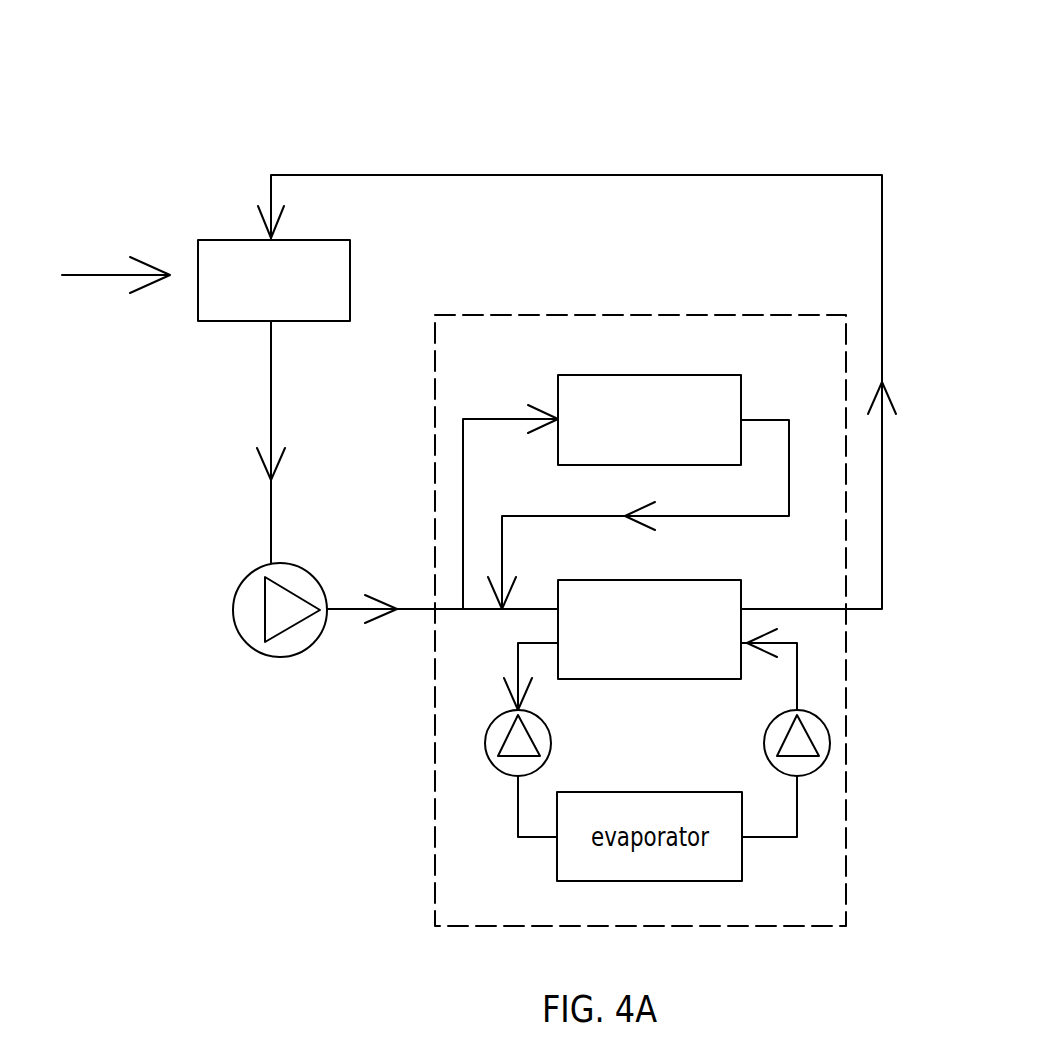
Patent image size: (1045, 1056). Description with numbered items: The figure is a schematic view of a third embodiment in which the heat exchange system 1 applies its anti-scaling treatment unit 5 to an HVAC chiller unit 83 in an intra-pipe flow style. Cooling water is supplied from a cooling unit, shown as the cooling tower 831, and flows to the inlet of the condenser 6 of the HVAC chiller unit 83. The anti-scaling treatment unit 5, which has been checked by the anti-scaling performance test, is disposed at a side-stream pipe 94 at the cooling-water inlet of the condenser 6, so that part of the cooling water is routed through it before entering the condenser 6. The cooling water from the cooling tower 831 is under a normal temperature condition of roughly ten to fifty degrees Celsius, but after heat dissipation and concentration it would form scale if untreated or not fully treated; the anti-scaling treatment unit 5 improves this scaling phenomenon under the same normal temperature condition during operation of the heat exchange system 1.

The heat exchange system 1 is at (858, 765).
The anti-scaling treatment unit 5 is at (668, 375).
The condenser 6 is at (558, 624).
The HVAC chiller unit 83 is at (418, 856).
The cooling tower 831 is at (218, 322).
The side-stream pipe 94 is at (493, 419).